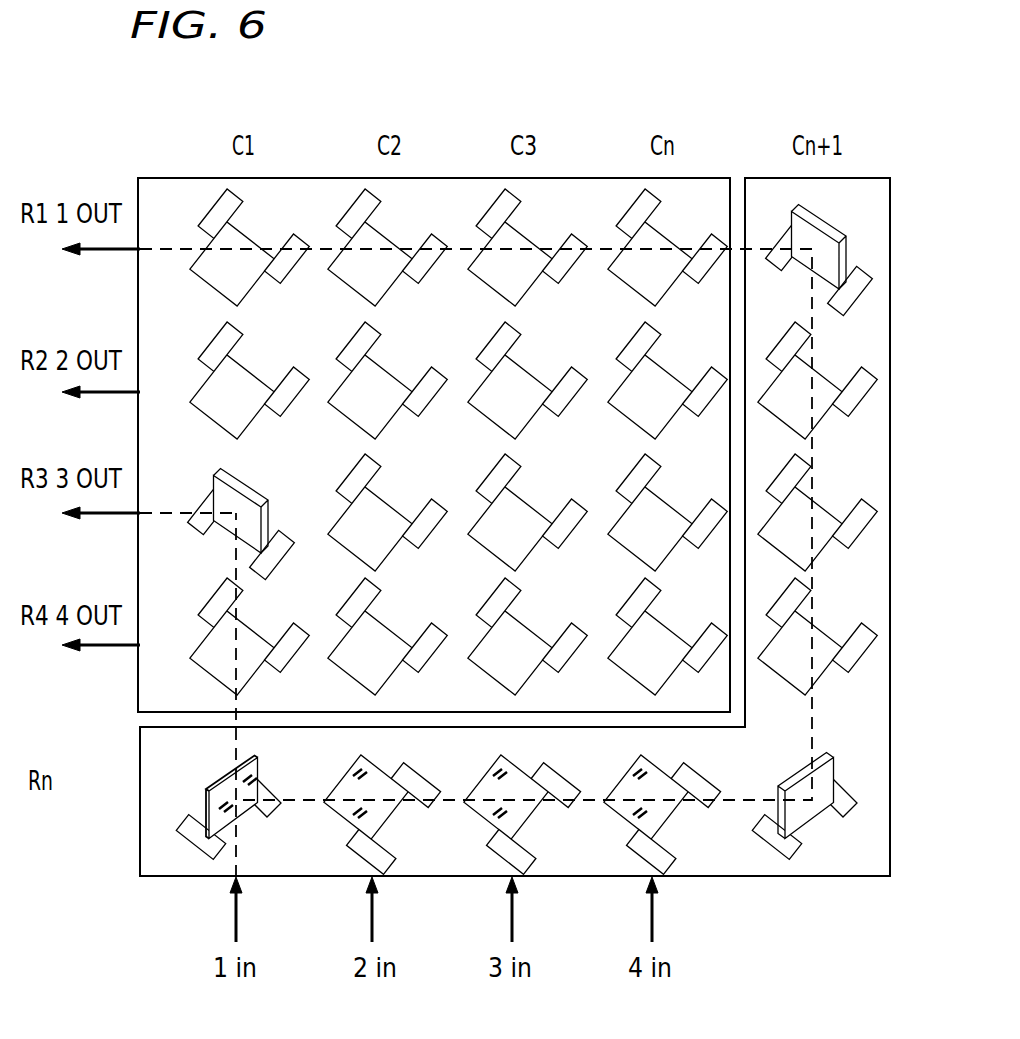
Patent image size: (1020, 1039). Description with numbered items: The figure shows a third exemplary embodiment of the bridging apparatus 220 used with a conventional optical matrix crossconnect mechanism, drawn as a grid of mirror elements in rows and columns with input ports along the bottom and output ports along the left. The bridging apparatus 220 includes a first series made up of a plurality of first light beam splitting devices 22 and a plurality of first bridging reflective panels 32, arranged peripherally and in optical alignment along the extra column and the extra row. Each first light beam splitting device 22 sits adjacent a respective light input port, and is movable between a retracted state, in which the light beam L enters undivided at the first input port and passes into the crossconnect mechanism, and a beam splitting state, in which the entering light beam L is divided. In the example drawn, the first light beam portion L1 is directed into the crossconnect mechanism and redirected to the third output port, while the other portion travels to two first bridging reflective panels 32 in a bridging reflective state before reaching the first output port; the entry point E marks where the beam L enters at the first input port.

The first light beam splitting device 22 is at (213, 790).
The first bridging reflective panel 32 is at (826, 238).
The bridging apparatus 220 is at (140, 870).
The light beam L is at (238, 849).
The first light beam portion L1 is at (237, 602).
The entry point E is at (236, 878).